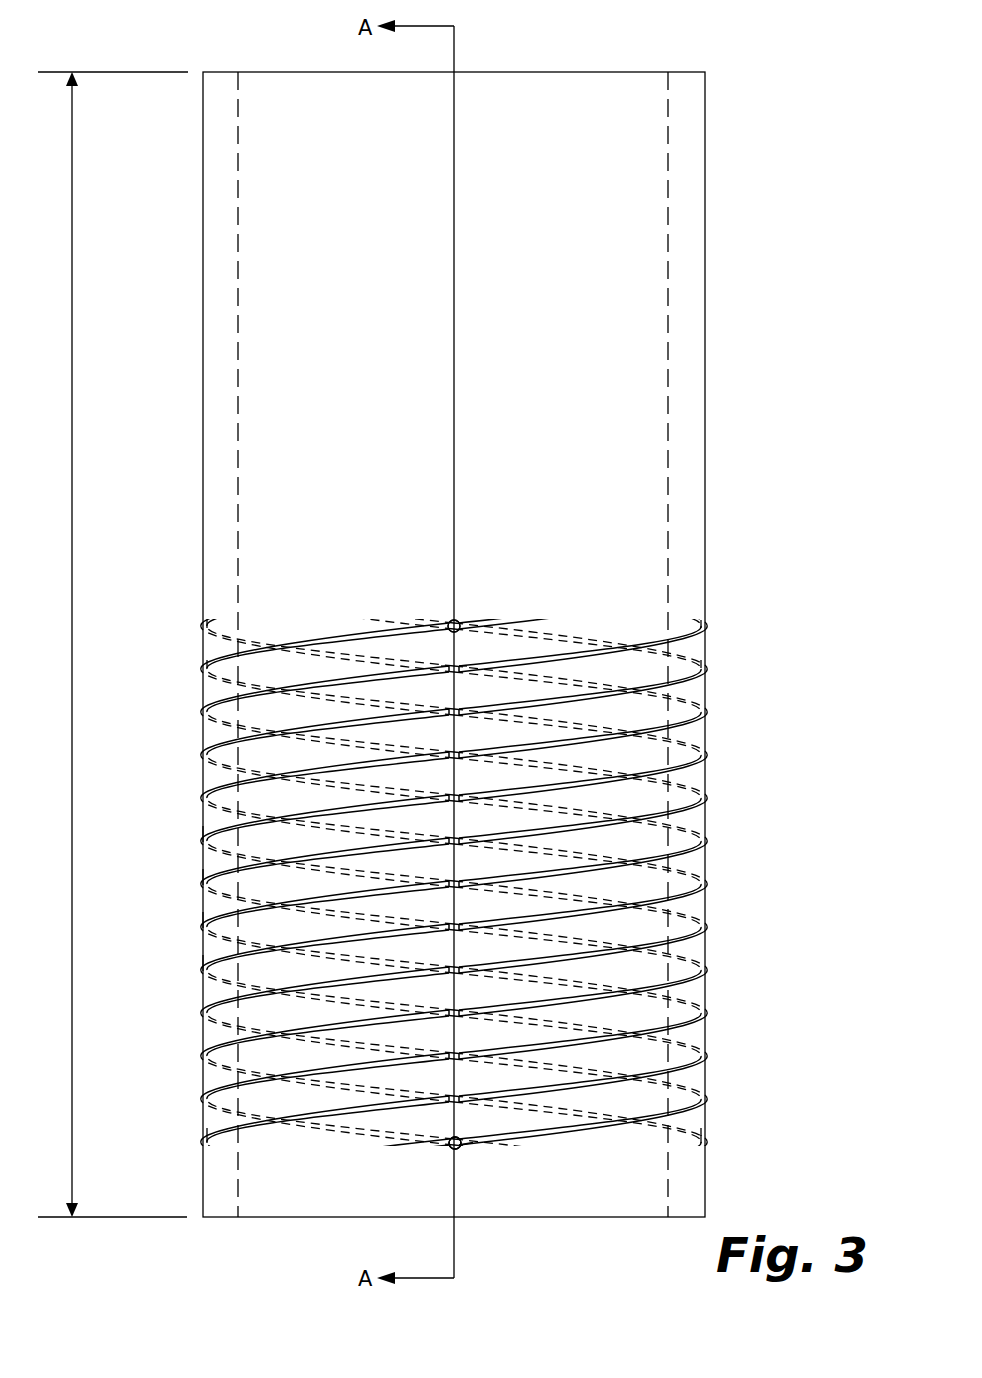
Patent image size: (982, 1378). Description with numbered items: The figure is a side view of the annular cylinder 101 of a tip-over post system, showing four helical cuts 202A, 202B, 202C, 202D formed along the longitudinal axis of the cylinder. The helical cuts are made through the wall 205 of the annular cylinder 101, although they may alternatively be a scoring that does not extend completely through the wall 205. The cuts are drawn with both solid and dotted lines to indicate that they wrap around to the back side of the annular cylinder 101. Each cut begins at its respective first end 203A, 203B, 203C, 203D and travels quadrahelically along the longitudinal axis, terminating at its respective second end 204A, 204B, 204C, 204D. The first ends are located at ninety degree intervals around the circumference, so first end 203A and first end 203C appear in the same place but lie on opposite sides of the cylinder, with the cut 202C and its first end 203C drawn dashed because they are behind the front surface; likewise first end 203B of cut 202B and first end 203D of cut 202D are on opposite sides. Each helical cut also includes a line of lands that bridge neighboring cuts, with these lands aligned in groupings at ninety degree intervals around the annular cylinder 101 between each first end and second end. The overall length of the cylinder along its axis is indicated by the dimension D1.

The annular cylinder 101 is at (578, 275).
The wall 205 is at (687, 166).
The helical cut 202A is at (222, 834).
The helical cut 202B is at (222, 877).
The helical cut 202C is at (222, 920).
The helical cut 202D is at (222, 963).
The first end 203A is at (459, 1149).
The first end 203B is at (698, 1140).
The first end 203C is at (451, 1149).
The first end 203D is at (207, 1143).
The second end 204A is at (459, 620).
The second end 204B is at (703, 618).
The second end 204C is at (449, 620).
The second end 204D is at (205, 618).
The length dimension D1 is at (113, 644).